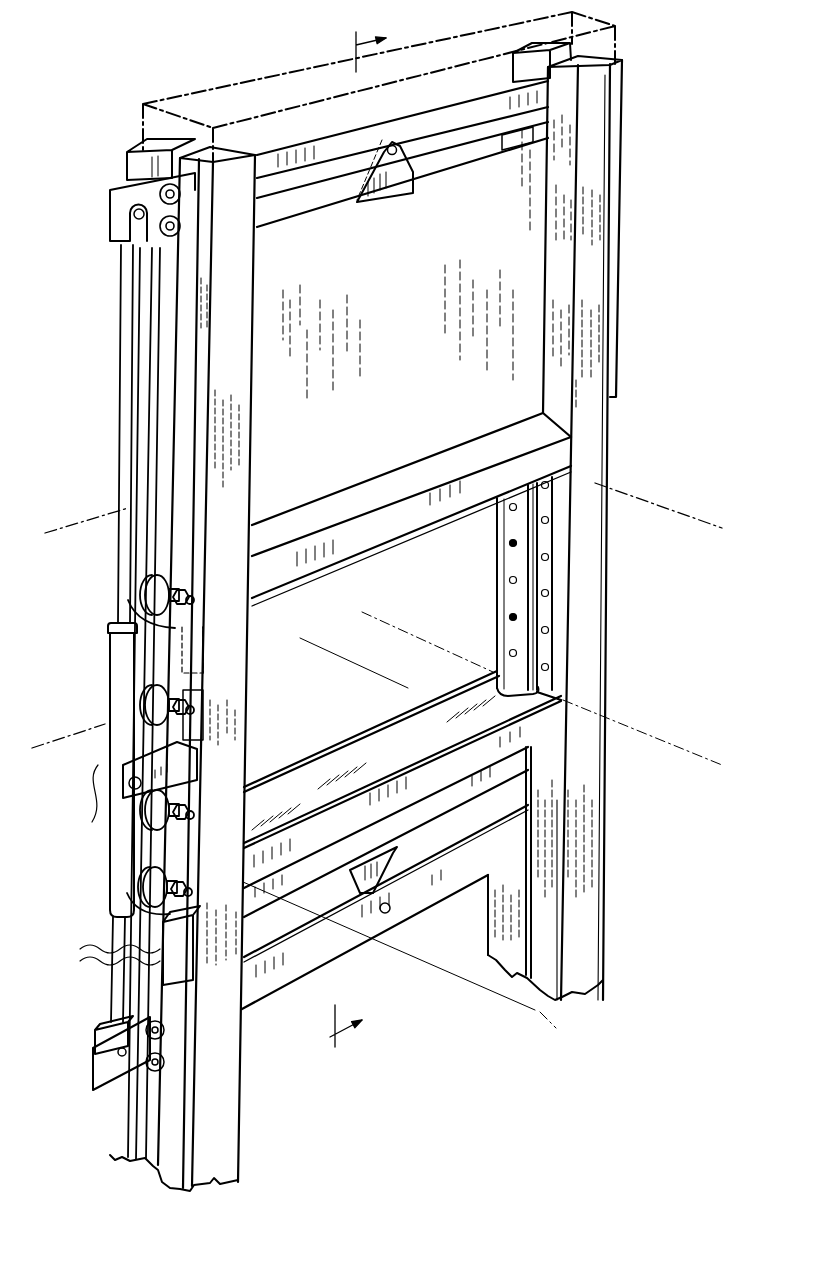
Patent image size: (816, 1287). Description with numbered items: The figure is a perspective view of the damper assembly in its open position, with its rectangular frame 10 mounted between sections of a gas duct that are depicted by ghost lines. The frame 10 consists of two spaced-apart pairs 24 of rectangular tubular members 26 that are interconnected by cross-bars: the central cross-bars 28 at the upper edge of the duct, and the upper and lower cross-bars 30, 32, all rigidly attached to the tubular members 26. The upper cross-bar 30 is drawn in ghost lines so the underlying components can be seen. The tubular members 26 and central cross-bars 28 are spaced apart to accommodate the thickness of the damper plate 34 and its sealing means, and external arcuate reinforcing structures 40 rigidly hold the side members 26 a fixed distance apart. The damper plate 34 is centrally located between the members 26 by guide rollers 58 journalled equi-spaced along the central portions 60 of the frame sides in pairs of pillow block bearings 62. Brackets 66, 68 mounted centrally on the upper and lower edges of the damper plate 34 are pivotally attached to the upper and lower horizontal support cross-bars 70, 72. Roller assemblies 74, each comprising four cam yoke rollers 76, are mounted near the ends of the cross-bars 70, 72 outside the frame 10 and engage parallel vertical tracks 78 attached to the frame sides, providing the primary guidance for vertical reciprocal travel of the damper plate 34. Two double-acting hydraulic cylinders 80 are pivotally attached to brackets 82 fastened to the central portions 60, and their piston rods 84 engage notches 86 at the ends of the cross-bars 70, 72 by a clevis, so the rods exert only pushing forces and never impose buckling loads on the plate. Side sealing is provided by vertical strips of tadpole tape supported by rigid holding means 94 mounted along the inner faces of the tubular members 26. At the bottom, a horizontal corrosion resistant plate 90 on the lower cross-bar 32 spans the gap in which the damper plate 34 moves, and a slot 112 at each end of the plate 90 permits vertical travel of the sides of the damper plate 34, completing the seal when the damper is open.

The rectangular frame 10 is at (575, 655).
The pairs of tubular members 24 is at (613, 512).
The rectangular tubular members 26 is at (590, 617).
The central cross-bars 28 is at (540, 455).
The upper cross-bar 30 is at (310, 70).
The lower cross-bar 32 is at (520, 738).
The damper plate 34 is at (520, 292).
The external arcuate reinforcing structures 40 is at (190, 672).
The guide rollers 58 is at (132, 614).
The central portions 60 is at (605, 580).
The pillow block bearings 62 is at (192, 598).
The upper bracket 66 is at (413, 175).
The lower bracket 68 is at (418, 863).
The upper horizontal support cross-bar 70 is at (469, 137).
The lower horizontal support cross-bar 72 is at (300, 955).
The roller assemblies 74 is at (147, 198).
The cam yoke rollers 76 is at (172, 238).
The vertical tracks 78 is at (143, 178).
The double-acting hydraulic cylinders 80 is at (112, 690).
The brackets 82 is at (125, 800).
The piston rods 84 is at (128, 462).
The notches 86 is at (105, 1044).
The horizontal corrosion resistant plate 90 is at (530, 705).
The rigid holding means 94 is at (545, 572).
The slot 112 is at (537, 690).